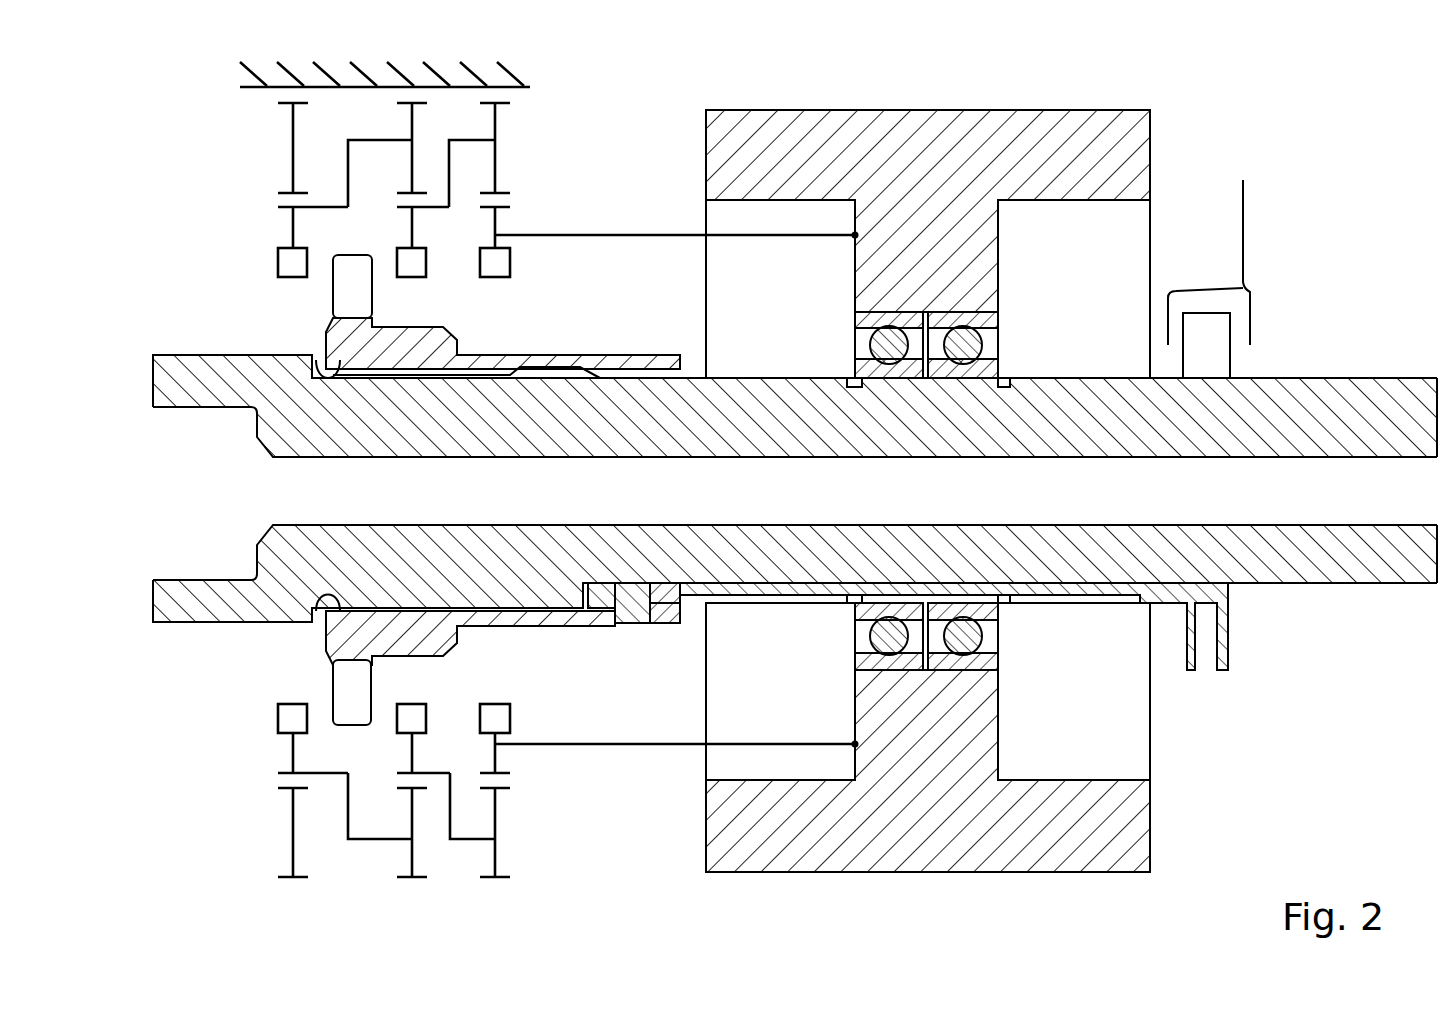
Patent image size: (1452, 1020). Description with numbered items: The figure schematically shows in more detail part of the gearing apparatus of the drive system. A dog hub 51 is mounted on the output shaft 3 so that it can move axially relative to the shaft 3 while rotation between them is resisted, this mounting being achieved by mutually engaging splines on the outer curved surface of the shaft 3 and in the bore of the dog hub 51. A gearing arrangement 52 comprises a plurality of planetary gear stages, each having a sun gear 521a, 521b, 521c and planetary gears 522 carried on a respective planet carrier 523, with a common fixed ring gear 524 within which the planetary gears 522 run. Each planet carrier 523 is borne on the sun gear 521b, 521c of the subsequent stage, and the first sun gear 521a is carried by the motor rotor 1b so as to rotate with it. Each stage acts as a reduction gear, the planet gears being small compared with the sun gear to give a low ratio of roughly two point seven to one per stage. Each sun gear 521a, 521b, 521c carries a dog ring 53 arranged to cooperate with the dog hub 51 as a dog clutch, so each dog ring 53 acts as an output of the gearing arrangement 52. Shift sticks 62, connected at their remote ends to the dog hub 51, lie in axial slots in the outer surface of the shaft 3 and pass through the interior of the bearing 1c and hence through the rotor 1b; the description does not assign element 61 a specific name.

The output shaft 3 is at (1333, 410).
The motor rotor 1b is at (1140, 133).
The bearing 1c is at (975, 320).
The dog hub 51 is at (340, 637).
The gearing arrangement 52 is at (493, 179).
The sun gear 521a is at (497, 228).
The sun gear 521b is at (413, 232).
The sun gear 521c is at (290, 232).
The planetary gears 522 is at (497, 157).
The planet carrier 523 is at (508, 205).
The fixed ring gear 524 is at (508, 82).
The dog ring 53 is at (283, 270).
The sensor 61 is at (1243, 250).
The shift sticks 62 is at (1172, 597).